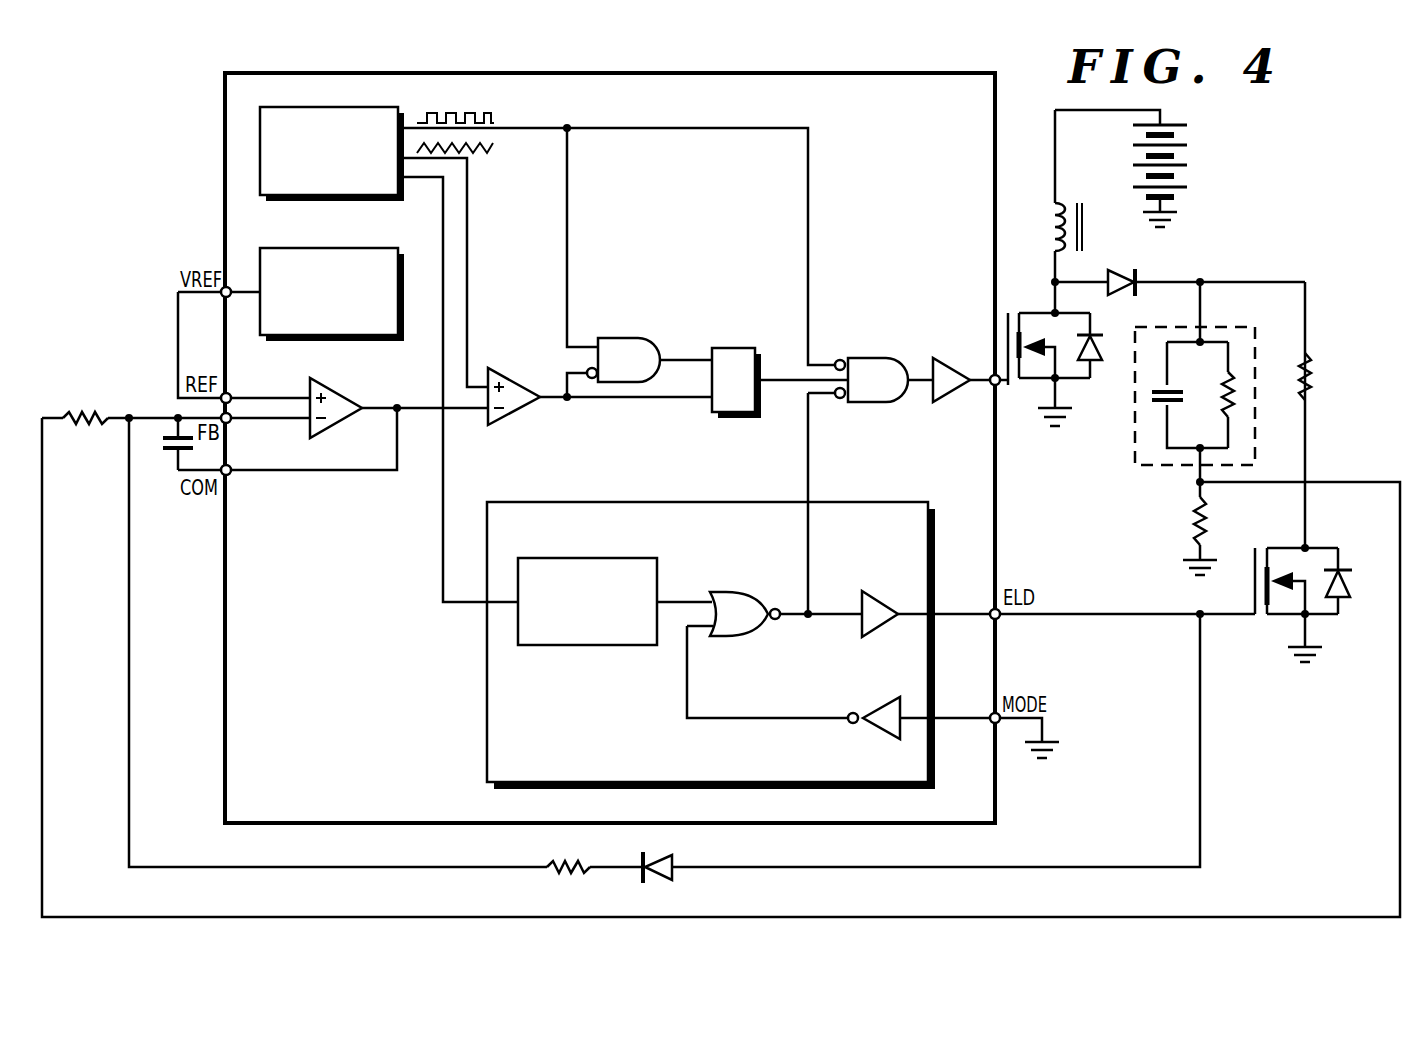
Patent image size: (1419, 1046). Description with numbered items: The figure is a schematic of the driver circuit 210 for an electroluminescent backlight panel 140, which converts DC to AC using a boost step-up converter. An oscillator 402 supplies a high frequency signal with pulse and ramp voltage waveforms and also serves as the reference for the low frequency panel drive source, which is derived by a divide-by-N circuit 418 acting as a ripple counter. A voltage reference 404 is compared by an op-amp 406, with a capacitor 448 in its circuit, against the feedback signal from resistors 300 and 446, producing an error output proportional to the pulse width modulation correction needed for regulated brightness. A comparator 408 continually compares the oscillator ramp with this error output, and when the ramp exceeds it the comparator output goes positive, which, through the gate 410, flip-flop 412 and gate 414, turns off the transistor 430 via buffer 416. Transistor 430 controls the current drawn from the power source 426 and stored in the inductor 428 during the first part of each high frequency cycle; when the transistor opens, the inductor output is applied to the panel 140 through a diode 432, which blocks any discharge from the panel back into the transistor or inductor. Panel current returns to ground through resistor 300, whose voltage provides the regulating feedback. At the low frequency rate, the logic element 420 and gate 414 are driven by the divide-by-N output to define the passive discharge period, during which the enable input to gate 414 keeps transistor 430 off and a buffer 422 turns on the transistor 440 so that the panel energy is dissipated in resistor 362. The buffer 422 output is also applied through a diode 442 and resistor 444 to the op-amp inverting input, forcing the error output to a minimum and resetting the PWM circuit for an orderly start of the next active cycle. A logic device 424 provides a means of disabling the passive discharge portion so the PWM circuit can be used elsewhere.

The driver circuit 210 is at (1288, 137).
The oscillator 402 is at (393, 201).
The voltage reference 404 is at (392, 340).
The op-amp 406 is at (330, 383).
The comparator 408 is at (497, 368).
The gate 410 is at (628, 338).
The flip-flop 412 is at (738, 348).
The gate 414 is at (870, 358).
The buffer 416 is at (947, 358).
The divide-by-N circuit 418 is at (590, 557).
The logic element 420 is at (730, 590).
The buffer 422 is at (880, 592).
The logic device 424 is at (862, 700).
The power source 426 is at (1190, 183).
The inductor 428 is at (1050, 207).
The transistor 430 is at (1067, 390).
The diode 432 is at (1140, 277).
The electroluminescent backlight panel 140 is at (1258, 395).
The resistor 300 is at (1190, 520).
The resistor 362 is at (1318, 393).
The transistor 440 is at (1322, 625).
The diode 442 is at (640, 858).
The resistor 444 is at (565, 858).
The resistor 446 is at (82, 423).
The capacitor 448 is at (175, 475).